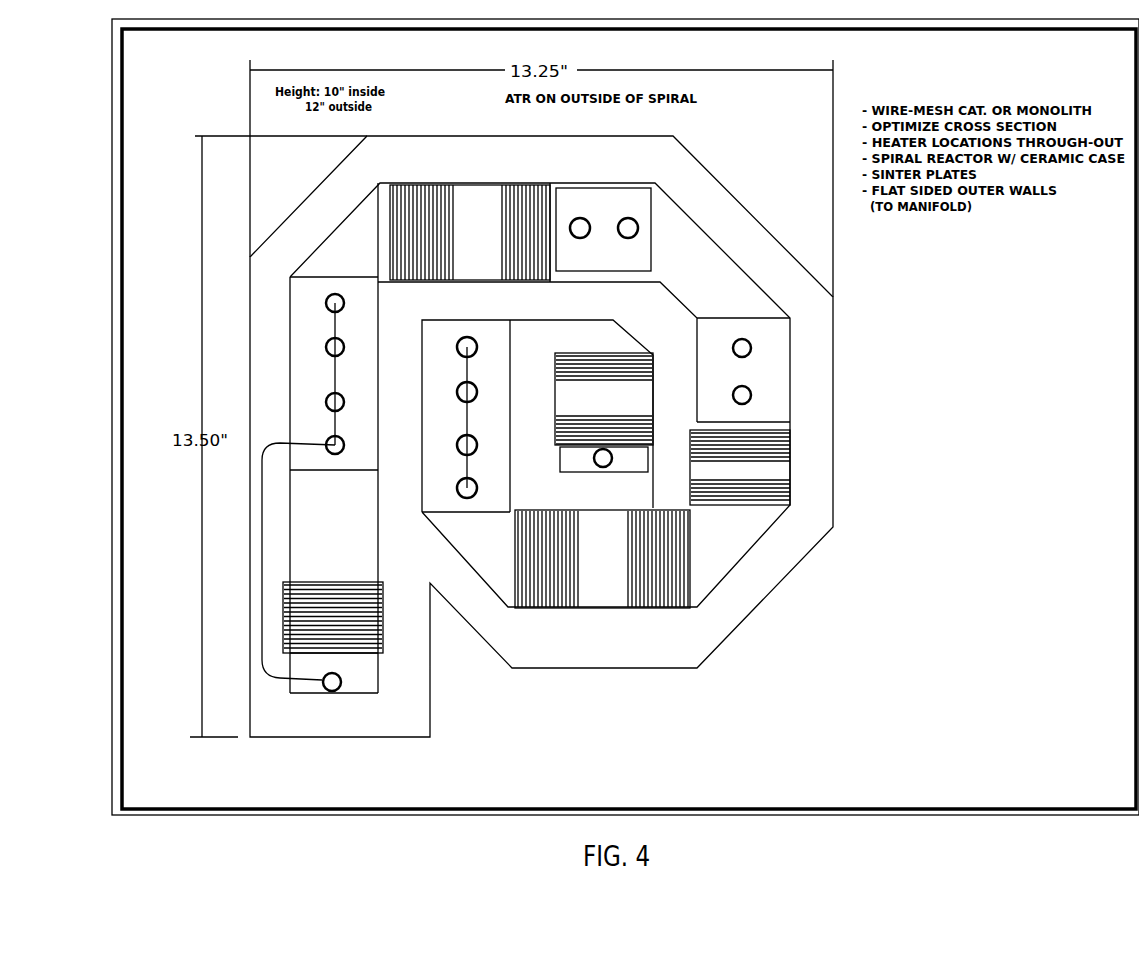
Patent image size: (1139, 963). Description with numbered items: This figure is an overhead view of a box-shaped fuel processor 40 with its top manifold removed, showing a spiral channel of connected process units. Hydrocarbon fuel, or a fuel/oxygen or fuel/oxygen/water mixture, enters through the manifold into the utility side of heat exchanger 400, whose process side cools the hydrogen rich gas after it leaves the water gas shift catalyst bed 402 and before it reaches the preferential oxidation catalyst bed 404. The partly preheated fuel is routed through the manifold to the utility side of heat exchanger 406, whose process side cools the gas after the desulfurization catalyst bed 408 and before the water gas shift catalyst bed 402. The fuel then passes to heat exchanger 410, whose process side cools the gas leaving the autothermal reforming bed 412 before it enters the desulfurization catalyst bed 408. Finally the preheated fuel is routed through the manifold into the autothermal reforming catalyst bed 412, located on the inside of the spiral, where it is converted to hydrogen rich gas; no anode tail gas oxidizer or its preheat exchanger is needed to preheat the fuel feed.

The box-shaped fuel processor 40 is at (808, 553).
The heat exchanger 400 is at (440, 503).
The water gas shift catalyst bed 402 is at (547, 597).
The preferential oxidation catalyst bed 404 is at (645, 440).
The heat exchanger 406 is at (753, 303).
The desulfurization catalyst bed 408 is at (535, 183).
The heat exchanger 410 is at (305, 360).
The autothermal reforming catalyst bed 412 is at (283, 631).